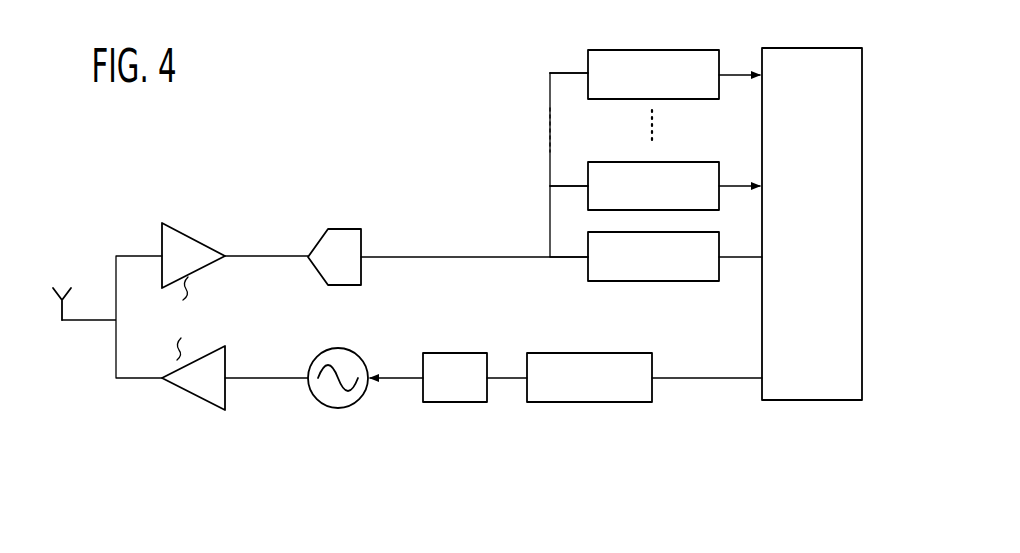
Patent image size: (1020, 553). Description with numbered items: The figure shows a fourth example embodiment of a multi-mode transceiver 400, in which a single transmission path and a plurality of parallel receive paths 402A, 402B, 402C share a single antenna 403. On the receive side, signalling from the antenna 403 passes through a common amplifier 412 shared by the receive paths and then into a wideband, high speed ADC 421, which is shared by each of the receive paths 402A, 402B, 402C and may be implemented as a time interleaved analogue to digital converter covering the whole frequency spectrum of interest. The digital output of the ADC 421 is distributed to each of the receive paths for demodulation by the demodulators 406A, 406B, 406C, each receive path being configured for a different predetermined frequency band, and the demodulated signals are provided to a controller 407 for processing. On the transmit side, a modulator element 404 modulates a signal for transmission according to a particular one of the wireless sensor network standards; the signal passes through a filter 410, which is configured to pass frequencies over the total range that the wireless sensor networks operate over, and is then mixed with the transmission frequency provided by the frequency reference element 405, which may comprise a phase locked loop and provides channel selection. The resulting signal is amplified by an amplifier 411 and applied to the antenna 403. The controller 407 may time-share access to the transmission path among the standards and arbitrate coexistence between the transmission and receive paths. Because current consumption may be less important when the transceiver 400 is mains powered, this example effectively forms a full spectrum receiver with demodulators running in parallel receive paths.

The transceiver 400 is at (326, 103).
The antenna 403 is at (65, 285).
The amplifier 412 is at (192, 238).
The amplifier 411 is at (175, 385).
The ADC 421 is at (361, 246).
The frequency reference element 405 is at (312, 400).
The filter 410 is at (445, 404).
The modulator element 404 is at (578, 404).
The receive path 402A is at (573, 262).
The receive path 402B is at (573, 184).
The receive path 402C is at (563, 72).
The demodulator 406A is at (703, 281).
The demodulator 406B is at (677, 162).
The demodulator 406C is at (670, 50).
The controller 407 is at (783, 402).